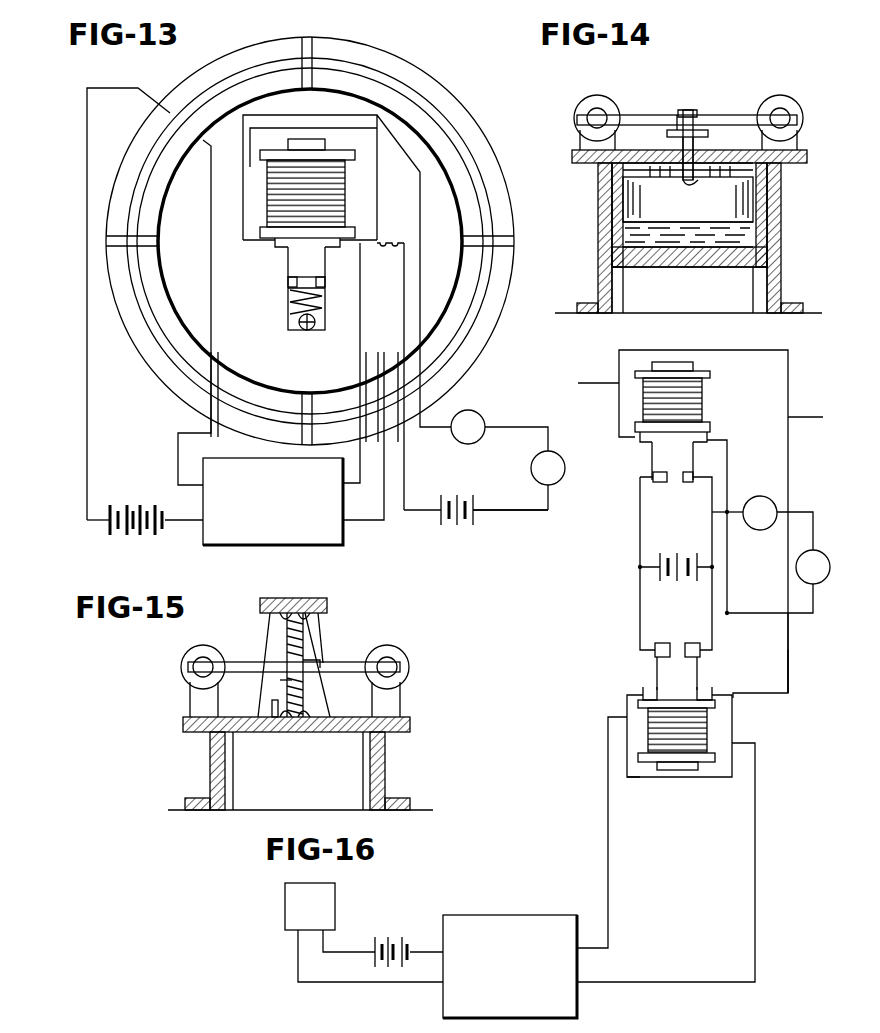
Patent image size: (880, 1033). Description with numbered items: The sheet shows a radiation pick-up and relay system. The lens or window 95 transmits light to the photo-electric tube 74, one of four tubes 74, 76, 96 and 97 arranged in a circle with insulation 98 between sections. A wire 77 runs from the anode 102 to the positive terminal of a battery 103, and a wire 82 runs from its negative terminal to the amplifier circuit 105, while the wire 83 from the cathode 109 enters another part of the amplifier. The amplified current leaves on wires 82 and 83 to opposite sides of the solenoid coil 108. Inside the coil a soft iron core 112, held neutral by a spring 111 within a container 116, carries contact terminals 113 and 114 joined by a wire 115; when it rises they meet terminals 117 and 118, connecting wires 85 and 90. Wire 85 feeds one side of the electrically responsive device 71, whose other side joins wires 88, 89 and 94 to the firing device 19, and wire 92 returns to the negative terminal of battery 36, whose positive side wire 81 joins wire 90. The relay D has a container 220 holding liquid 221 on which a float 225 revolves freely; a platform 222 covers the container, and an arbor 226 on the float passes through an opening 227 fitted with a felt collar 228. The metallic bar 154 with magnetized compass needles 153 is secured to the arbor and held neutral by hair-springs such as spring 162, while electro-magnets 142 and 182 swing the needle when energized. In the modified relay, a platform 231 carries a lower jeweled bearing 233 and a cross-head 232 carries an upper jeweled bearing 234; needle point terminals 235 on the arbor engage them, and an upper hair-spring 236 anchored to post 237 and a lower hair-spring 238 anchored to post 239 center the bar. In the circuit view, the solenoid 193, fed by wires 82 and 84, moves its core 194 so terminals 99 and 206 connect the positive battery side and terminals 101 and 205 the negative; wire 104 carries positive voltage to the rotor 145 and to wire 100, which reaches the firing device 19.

In FIG. 13, the photo-electric tube 74 is at (210, 72).
In FIG. 13, the lens or window 95 is at (250, 52).
In FIG. 13, the photo-electric tube 96 is at (458, 115).
In FIG. 13, the insulation 98 is at (307, 40).
In FIG. 13, the photo-electric tube 97 is at (158, 365).
In FIG. 13, the photo-electric tube 76 is at (470, 336).
In FIG. 13, the anode 102 is at (188, 108).
In FIG. 13, the wire 77 is at (87, 190).
In FIG. 16, the wire 77 is at (340, 952).
In FIG. 13, the cathode 109 is at (185, 148).
In FIG. 13, the battery 103 is at (133, 533).
In FIG. 16, the battery 103 is at (392, 937).
In FIG. 13, the amplifier circuit block diagram 105 is at (240, 527).
In FIG. 16, the amplifier circuit block diagram 105 is at (505, 915).
In FIG. 13, the wire 82 is at (178, 525).
In FIG. 16, the wire 82 is at (603, 383).
In FIG. 13, the wire 83 is at (211, 235).
In FIG. 16, the wire 83 is at (755, 815).
In FIG. 13, the wire 85 is at (243, 215).
In FIG. 16, the wire 85 is at (733, 510).
In FIG. 13, the wire 90 is at (406, 250).
In FIG. 16, the wire 90 is at (727, 577).
In FIG. 13, the solenoid coil 108 is at (280, 188).
In FIG. 16, the solenoid coil 108 is at (700, 730).
In FIG. 13, the contact terminal 117 is at (282, 250).
In FIG. 16, the contact terminal 117 is at (708, 688).
In FIG. 13, the contact terminal 118 is at (330, 250).
In FIG. 16, the contact terminal 118 is at (648, 688).
In FIG. 13, the soft iron core 112 is at (280, 265).
In FIG. 16, the soft iron core 112 is at (690, 670).
In FIG. 13, the wire 115 is at (303, 282).
In FIG. 13, the contact terminal 113 is at (290, 285).
In FIG. 16, the contact terminal 113 is at (700, 647).
In FIG. 13, the contact terminal 114 is at (322, 292).
In FIG. 16, the contact terminal 114 is at (660, 650).
In FIG. 13, the spring 111 is at (292, 312).
In FIG. 13, the container 116 is at (296, 330).
In FIG. 13, the electrically responsive device 71 is at (475, 420).
In FIG. 13, the wire 88 is at (510, 427).
In FIG. 16, the wire 88 is at (788, 583).
In FIG. 13, the firing device 19 is at (556, 472).
In FIG. 16, the firing device 19 is at (820, 583).
In FIG. 13, the wire 89 is at (548, 427).
In FIG. 16, the wire 89 is at (790, 645).
In FIG. 13, the wire 94 is at (548, 450).
In FIG. 16, the wire 94 is at (795, 613).
In FIG. 13, the wire 81 is at (404, 485).
In FIG. 16, the wire 81 is at (640, 515).
In FIG. 13, the battery 36 is at (457, 527).
In FIG. 16, the battery 36 is at (670, 555).
In FIG. 13, the wire 92 is at (528, 515).
In FIG. 16, the wire 92 is at (712, 514).
In FIG. 14, the electro-magnet 142 is at (593, 98).
In FIG. 15, the electro-magnet 142 is at (197, 648).
In FIG. 14, the electro-magnet 182 is at (780, 98).
In FIG. 15, the electro-magnet 182 is at (395, 648).
In FIG. 14, the magnetized compass needle 153 is at (635, 116).
In FIG. 15, the magnetized compass needle 153 is at (235, 662).
In FIG. 14, the helical coiled spring 162 is at (677, 116).
In FIG. 14, the metallic bar 154 is at (690, 110).
In FIG. 15, the metallic bar 154 is at (268, 660).
In FIG. 14, the opening 227 is at (678, 155).
In FIG. 14, the collar 228 is at (700, 152).
In FIG. 14, the arbor 226 is at (730, 160).
In FIG. 15, the arbor 226 is at (318, 658).
In FIG. 14, the platform 222 is at (790, 160).
In FIG. 14, the relay D is at (593, 234).
In FIG. 14, the container 220 is at (770, 198).
In FIG. 14, the float 225 is at (623, 187).
In FIG. 14, the liquid 221 is at (770, 232).
In FIG. 15, the cross-head 232 is at (325, 600).
In FIG. 15, the upper jeweled bearing 234 is at (300, 600).
In FIG. 15, the needle point bearing terminals 235 is at (284, 603).
In FIG. 15, the anchor post 237 is at (325, 617).
In FIG. 15, the upper spirally coiled hair-spring 236 is at (322, 633).
In FIG. 15, the lower spirally coiled hair-spring 238 is at (282, 683).
In FIG. 15, the anchor post 239 is at (272, 710).
In FIG. 15, the supporting platform 231 is at (355, 733).
In FIG. 15, the lower jeweled bearing 233 is at (295, 733).
In FIG. 16, the wire 104 is at (705, 350).
In FIG. 16, the solenoid 193 is at (700, 395).
In FIG. 16, the contact terminal 99 is at (642, 440).
In FIG. 16, the contact terminal 101 is at (718, 440).
In FIG. 16, the soft iron core 194 is at (655, 455).
In FIG. 16, the contact terminal 206 is at (660, 483).
In FIG. 16, the contact terminal 205 is at (688, 483).
In FIG. 16, the rotor 145 is at (758, 497).
In FIG. 16, the wire 84 is at (798, 417).
In FIG. 16, the wire 100 is at (795, 512).